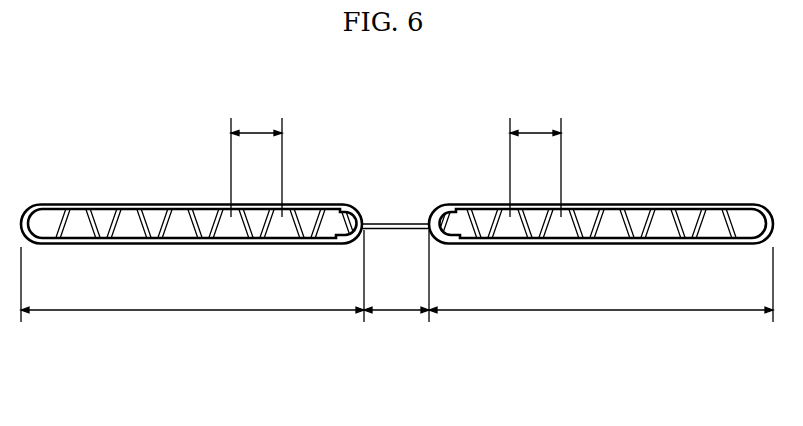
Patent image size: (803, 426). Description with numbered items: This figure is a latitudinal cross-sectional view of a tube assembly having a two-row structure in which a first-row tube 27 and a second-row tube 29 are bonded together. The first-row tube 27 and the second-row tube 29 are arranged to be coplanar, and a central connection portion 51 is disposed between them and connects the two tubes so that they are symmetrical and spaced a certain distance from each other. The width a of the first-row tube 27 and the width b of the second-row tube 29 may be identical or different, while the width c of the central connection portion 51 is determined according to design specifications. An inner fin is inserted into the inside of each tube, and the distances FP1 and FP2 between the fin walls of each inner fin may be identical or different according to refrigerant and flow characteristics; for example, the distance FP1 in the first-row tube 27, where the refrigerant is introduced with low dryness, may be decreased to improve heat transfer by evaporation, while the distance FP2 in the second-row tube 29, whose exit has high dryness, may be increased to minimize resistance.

The first-row tube 27 is at (116, 177).
The second-row tube 29 is at (680, 177).
The central connection portion 51 is at (395, 223).
The distance between fin walls FP1 is at (256, 159).
The distance between fin walls FP2 is at (535, 159).
The width a is at (192, 276).
The width b is at (601, 284).
The width c is at (396, 276).